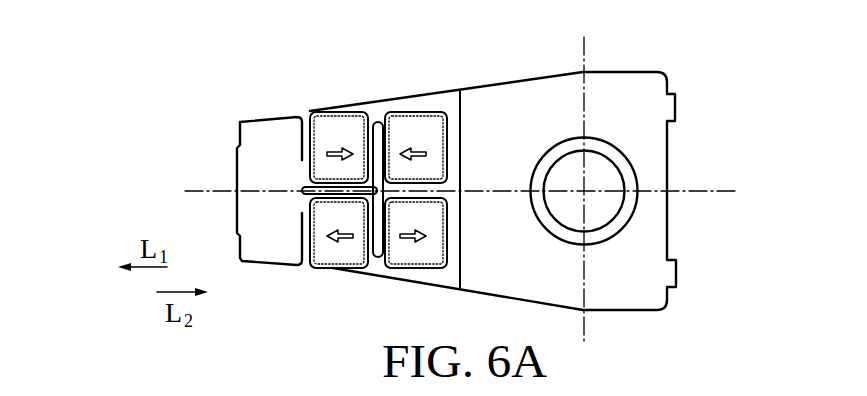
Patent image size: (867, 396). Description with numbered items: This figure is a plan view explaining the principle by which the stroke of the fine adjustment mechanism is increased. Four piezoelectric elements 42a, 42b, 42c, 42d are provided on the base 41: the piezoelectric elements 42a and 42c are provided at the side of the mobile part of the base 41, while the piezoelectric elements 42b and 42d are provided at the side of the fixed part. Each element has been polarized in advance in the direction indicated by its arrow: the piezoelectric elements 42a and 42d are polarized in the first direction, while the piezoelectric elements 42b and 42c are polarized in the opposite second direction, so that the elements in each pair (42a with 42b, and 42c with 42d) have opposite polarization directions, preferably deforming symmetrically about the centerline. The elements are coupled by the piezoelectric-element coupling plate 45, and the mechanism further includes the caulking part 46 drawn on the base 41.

The base 41 is at (669, 148).
The piezoelectric element 42a is at (326, 187).
The piezoelectric element 42b is at (448, 217).
The piezoelectric element 42c is at (333, 112).
The piezoelectric element 42d is at (430, 113).
The piezoelectric-element coupling plate 45 is at (403, 112).
The caulking part 46 is at (633, 181).